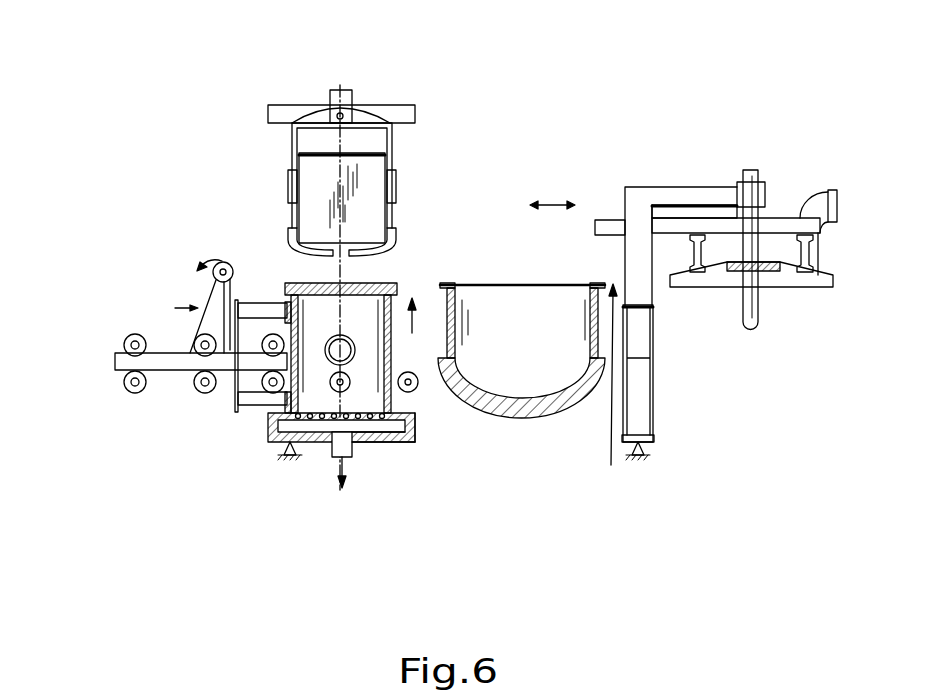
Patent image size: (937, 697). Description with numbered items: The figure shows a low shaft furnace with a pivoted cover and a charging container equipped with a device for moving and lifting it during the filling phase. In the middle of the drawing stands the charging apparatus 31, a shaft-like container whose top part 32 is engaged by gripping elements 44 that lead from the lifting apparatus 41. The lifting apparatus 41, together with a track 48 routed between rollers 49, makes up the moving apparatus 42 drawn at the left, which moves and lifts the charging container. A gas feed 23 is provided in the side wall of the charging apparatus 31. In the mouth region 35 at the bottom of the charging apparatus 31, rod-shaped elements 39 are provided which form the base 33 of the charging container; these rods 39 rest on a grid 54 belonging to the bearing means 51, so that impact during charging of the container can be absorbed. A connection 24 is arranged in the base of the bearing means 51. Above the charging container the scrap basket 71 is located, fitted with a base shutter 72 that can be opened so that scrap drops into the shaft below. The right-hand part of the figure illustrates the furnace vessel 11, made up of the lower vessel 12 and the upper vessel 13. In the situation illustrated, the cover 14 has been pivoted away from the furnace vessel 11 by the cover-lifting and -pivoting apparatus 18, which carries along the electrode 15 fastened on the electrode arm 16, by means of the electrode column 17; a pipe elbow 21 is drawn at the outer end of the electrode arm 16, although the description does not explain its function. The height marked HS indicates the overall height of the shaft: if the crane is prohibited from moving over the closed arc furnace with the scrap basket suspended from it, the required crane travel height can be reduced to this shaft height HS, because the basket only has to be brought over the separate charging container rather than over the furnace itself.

The furnace vessel 11 is at (495, 342).
The lower vessel 12 is at (533, 405).
The upper vessel 13 is at (587, 337).
The cover 14 is at (782, 280).
The electrode 15 is at (752, 170).
The electrode arm 16 is at (676, 200).
The electrode column 17 is at (655, 442).
The cover-lifting and -pivoting apparatus 18 is at (605, 220).
The pipe elbow 21 is at (821, 190).
The gas feed 23 is at (340, 352).
The connection 24 is at (333, 453).
The charging apparatus 31 is at (315, 332).
The top part 32 is at (400, 288).
The base 33 is at (300, 447).
The mouth region 35 is at (412, 440).
The rod-shaped elements 39 is at (362, 443).
The lifting apparatus 41 is at (213, 270).
The moving apparatus 42 is at (215, 293).
The gripping elements 44 is at (257, 312).
The track 48 is at (127, 362).
The rollers 49 is at (137, 394).
The bearing means 51 is at (377, 438).
The grid 54 is at (367, 438).
The scrap basket 71 is at (360, 170).
The base shutter 72 is at (393, 233).
The overall height of the shaft HS is at (613, 395).